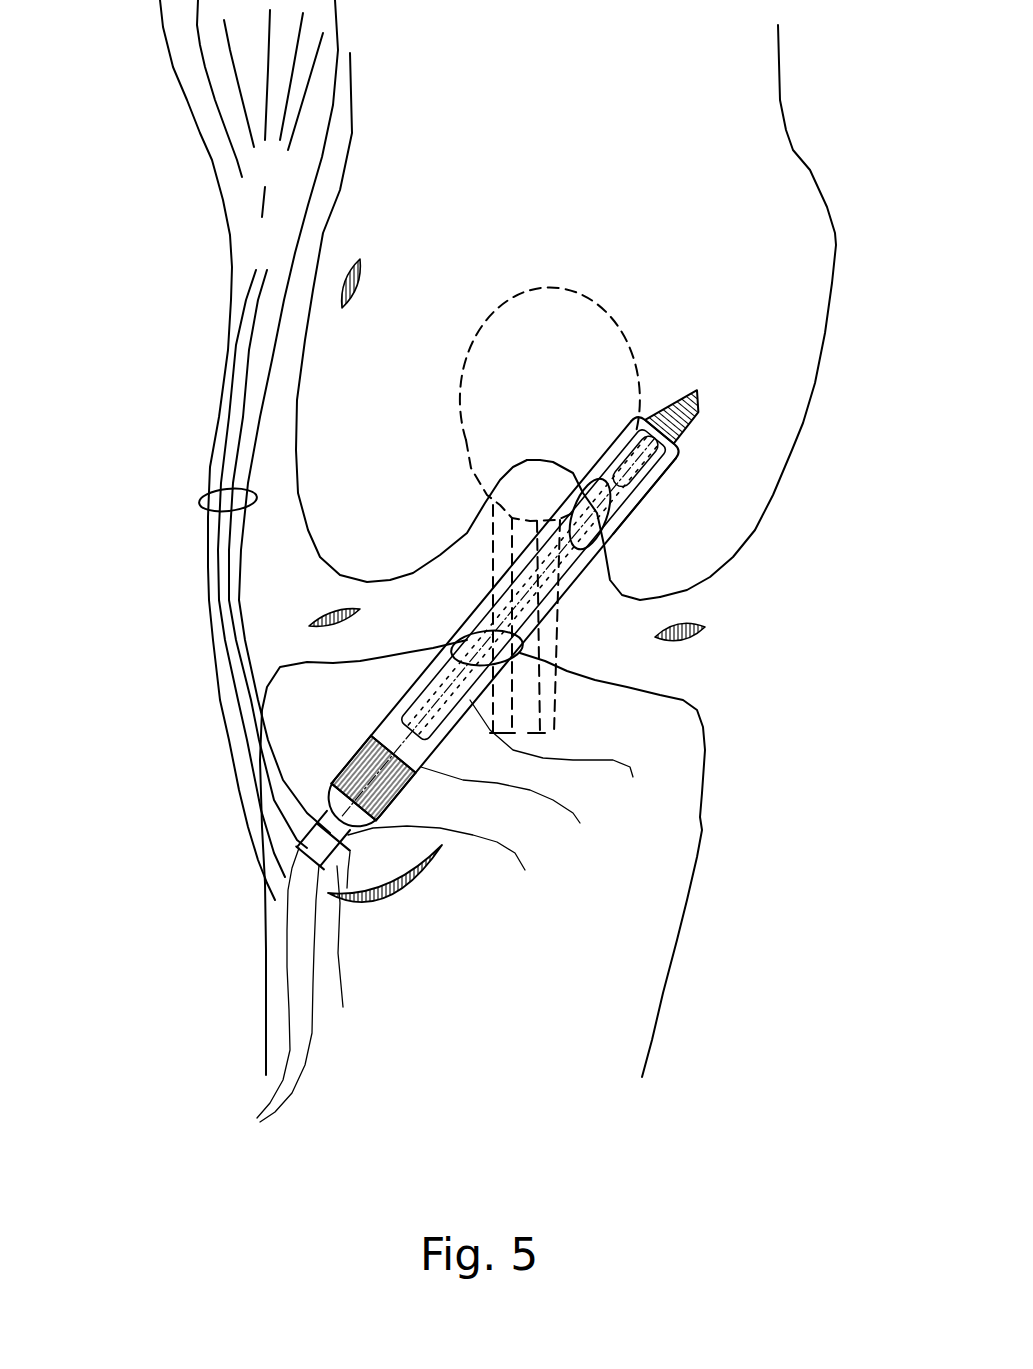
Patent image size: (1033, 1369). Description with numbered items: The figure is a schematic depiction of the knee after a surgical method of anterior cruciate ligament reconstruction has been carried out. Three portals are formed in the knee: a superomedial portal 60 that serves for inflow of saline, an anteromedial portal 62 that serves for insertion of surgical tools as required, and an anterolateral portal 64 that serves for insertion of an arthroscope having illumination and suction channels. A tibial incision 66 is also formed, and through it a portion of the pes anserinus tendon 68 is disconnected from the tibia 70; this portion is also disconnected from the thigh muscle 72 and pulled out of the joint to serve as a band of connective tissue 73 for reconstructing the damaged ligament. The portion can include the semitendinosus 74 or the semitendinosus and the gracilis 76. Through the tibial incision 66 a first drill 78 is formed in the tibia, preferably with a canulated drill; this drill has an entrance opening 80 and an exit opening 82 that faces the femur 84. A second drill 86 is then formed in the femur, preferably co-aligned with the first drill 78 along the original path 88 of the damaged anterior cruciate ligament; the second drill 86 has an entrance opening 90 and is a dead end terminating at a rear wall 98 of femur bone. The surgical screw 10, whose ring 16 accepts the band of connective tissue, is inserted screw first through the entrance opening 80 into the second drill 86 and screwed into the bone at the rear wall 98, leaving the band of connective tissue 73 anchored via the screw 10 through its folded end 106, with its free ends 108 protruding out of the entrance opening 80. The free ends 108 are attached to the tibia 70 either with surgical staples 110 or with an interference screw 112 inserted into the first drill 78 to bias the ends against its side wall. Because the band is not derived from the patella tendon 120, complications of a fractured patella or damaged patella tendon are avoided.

The surgical screw 10 is at (586, 602).
The ring 16 is at (624, 640).
The superomedial portal 60 is at (408, 281).
The anteromedial portal 62 is at (310, 590).
The anterolateral portal 64 is at (725, 652).
The tibial incision 66 is at (406, 924).
The pes anserinus tendon 68 is at (181, 522).
The tibia 70 is at (666, 865).
The thigh muscle 72 is at (333, 424).
The band of connective tissue 73 is at (673, 532).
The semitendinosus 74 is at (201, 450).
The gracilis 76 is at (205, 573).
The first drill 78 is at (511, 811).
The entrance opening 80 is at (448, 866).
The exit opening 82 is at (472, 627).
The femur 84 is at (768, 311).
The second drill 86 is at (682, 522).
The original path 88 is at (564, 755).
The entrance opening 90 is at (548, 476).
The rear wall 98 is at (687, 334).
The folded end 106 is at (587, 433).
The free ends 108 is at (259, 994).
The surgical staple 110 is at (359, 947).
The interference screw 112 is at (351, 745).
The patella tendon 120 is at (642, 510).